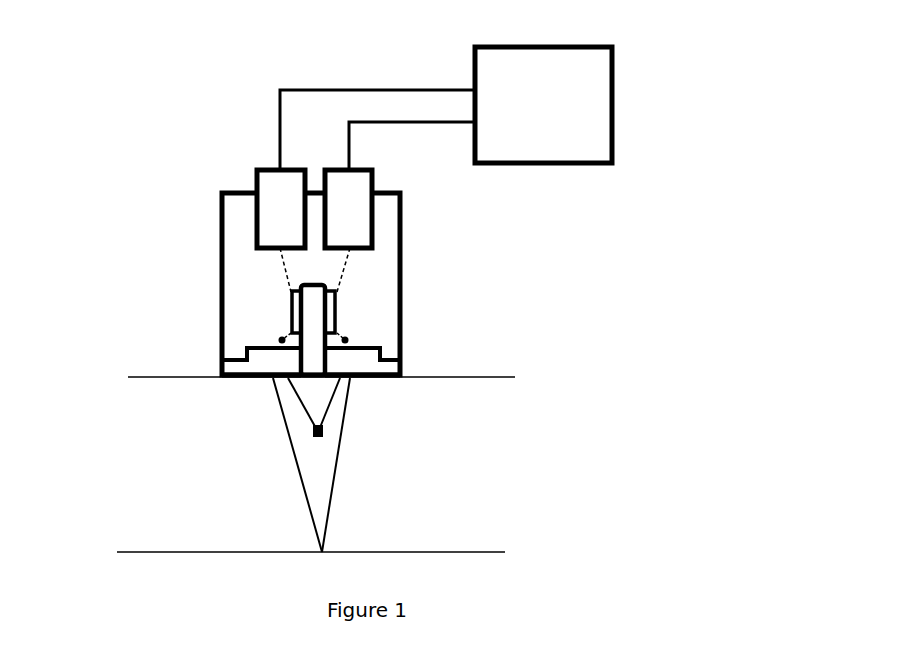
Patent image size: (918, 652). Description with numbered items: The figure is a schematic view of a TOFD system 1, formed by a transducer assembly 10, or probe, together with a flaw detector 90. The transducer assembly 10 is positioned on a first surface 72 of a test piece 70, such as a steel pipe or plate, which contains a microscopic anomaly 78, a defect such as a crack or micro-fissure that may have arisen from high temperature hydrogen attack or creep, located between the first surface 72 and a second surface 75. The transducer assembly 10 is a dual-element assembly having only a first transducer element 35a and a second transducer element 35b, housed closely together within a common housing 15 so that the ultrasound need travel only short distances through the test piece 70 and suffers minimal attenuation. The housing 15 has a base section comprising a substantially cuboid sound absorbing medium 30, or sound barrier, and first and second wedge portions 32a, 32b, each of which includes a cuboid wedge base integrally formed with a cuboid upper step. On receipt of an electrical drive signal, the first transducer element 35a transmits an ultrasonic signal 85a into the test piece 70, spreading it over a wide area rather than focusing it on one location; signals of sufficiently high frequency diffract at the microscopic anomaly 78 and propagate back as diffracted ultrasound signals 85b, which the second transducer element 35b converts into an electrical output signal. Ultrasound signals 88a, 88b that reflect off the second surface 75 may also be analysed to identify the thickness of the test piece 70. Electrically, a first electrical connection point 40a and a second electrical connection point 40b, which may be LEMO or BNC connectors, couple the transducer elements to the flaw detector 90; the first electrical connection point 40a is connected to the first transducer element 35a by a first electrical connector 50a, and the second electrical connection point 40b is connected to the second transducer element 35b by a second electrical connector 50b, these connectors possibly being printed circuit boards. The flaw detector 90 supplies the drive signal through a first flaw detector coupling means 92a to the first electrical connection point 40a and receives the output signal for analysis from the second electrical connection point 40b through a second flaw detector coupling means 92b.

The TOFD system 1 is at (142, 93).
The transducer assembly 10 is at (196, 197).
The housing 15 is at (416, 255).
The sound absorbing medium 30 is at (312, 320).
The first wedge portion 32a is at (252, 367).
The second wedge portion 32b is at (378, 368).
The first transducer element 35a is at (272, 346).
The second transducer element 35b is at (362, 346).
The first electrical connection point 40a is at (258, 181).
The second electrical connection point 40b is at (355, 186).
The first electrical connector 50a is at (291, 307).
The second electrical connector 50b is at (335, 307).
The test piece 70 is at (105, 408).
The first surface 72 is at (158, 375).
The second surface 75 is at (140, 550).
The microscopic anomaly 78 is at (315, 440).
The transmitted ultrasound signal 85a is at (302, 413).
The diffracted ultrasound signal 85b is at (328, 416).
The reflected ultrasound signal 88a is at (308, 517).
The reflected ultrasound signal 88b is at (337, 503).
The flaw detector 90 is at (558, 66).
The first flaw detector coupling means 92a is at (318, 89).
The second flaw detector coupling means 92b is at (440, 121).